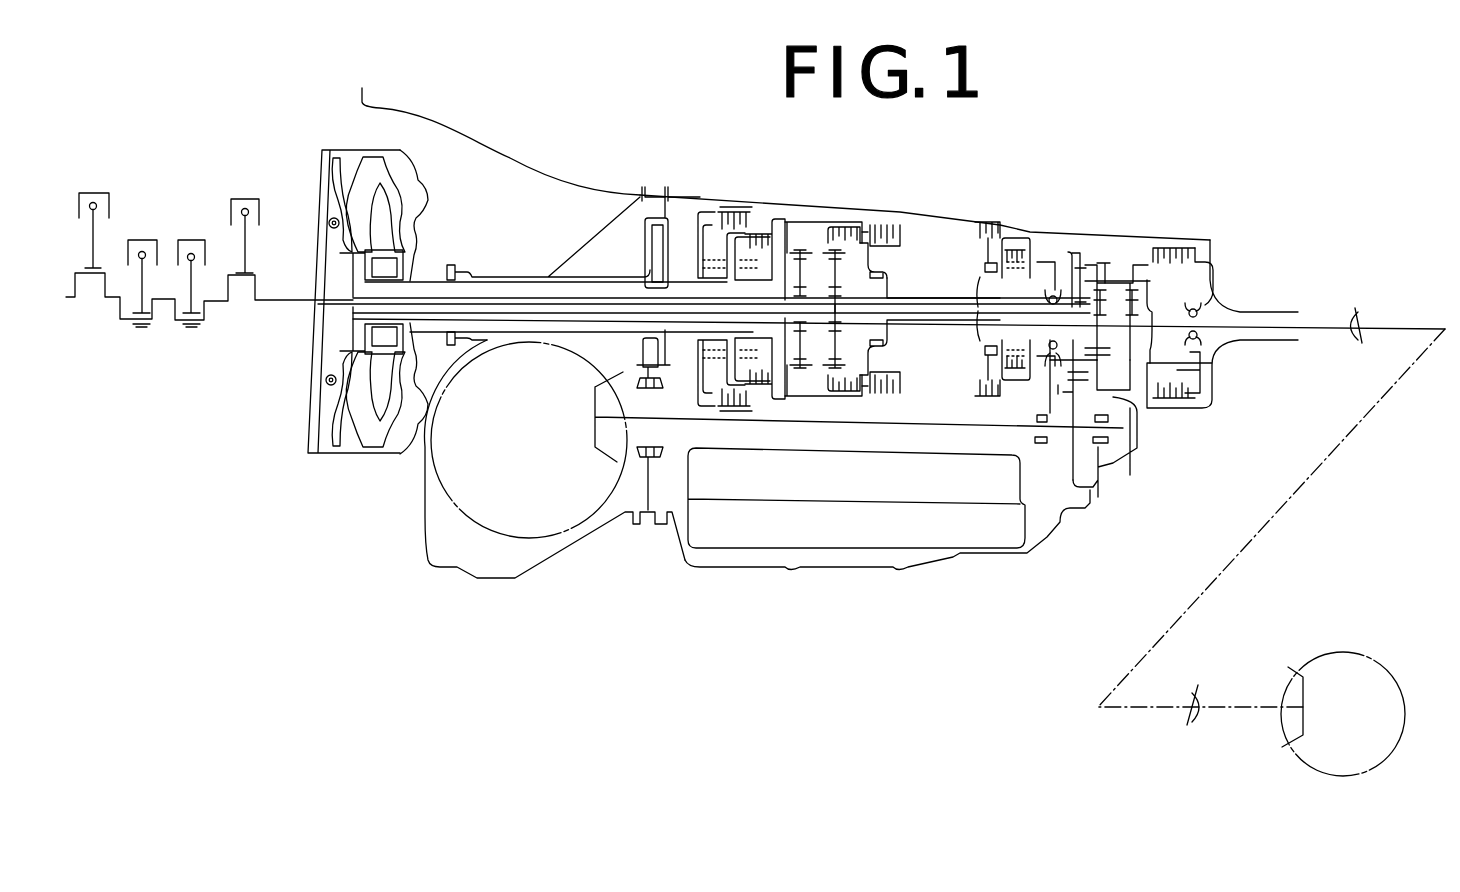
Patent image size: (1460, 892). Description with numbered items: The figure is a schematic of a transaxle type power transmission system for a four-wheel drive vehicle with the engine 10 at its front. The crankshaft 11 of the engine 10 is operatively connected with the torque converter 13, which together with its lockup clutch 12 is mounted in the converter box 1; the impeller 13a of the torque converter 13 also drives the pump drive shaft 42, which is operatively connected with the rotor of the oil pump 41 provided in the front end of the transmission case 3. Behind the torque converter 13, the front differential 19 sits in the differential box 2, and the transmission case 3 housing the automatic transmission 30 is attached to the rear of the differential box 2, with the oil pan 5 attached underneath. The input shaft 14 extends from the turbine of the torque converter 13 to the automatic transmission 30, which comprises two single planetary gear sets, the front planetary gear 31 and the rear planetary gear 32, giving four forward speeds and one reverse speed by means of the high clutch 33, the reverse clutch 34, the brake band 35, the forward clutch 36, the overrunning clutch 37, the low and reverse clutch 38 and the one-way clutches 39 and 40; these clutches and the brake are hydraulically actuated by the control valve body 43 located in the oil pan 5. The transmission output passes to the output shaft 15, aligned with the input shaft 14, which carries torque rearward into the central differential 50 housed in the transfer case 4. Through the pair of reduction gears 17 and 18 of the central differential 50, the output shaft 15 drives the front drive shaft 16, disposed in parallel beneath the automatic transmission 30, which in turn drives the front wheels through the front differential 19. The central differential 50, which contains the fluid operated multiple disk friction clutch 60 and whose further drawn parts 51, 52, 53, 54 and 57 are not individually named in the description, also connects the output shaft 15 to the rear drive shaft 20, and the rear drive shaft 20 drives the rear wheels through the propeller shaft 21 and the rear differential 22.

The converter box 1 is at (482, 137).
The differential box 2 is at (557, 563).
The transmission case 3 is at (688, 195).
The transfer case 4 is at (1097, 232).
The oil pan 5 is at (930, 562).
The engine 10 is at (188, 220).
The crankshaft 11 is at (273, 301).
The lockup clutch 12 is at (337, 190).
The torque converter 13 is at (422, 183).
The impeller 13a is at (413, 215).
The input shaft 14 is at (475, 297).
The output shaft 15 is at (1031, 302).
The front drive shaft 16 is at (915, 430).
The reduction gear 17 is at (1080, 267).
The reduction gear 18 is at (1098, 490).
The front differential 19 is at (582, 525).
The rear drive shaft 20 is at (1276, 325).
The propeller shaft 21 is at (1420, 327).
The rear differential 22 is at (1367, 655).
The automatic transmission 30 is at (892, 195).
The front planetary gear 31 is at (796, 347).
The rear planetary gear 32 is at (830, 347).
The high clutch 33 is at (763, 230).
The reverse clutch 34 is at (727, 227).
The brake band 35 is at (730, 210).
The forward clutch 36 is at (843, 227).
The overrunning clutch 37 is at (893, 222).
The low and reverse clutch 38 is at (990, 218).
The one-way clutch 39 is at (721, 324).
The one-way clutch 40 is at (937, 306).
The oil pump 41 is at (647, 257).
The pump drive shaft 42 is at (533, 280).
The control valve body 43 is at (838, 544).
The central differential 50 is at (1123, 250).
The transfer clutch 51 is at (1082, 410).
The transfer planetary gear 52 is at (1105, 263).
The transfer gear 53 is at (1113, 370).
The transfer clutch 54 is at (1133, 262).
The center differential 57 is at (1133, 340).
The multiple disk friction clutch 60 is at (1193, 248).